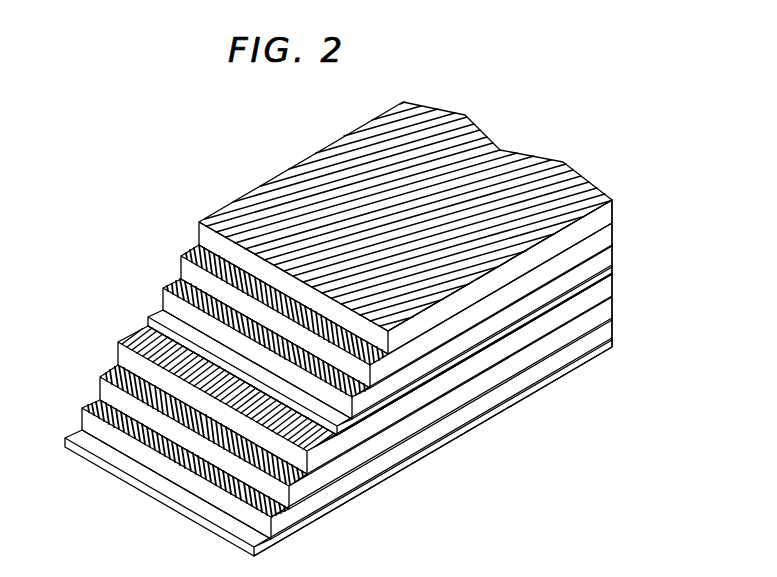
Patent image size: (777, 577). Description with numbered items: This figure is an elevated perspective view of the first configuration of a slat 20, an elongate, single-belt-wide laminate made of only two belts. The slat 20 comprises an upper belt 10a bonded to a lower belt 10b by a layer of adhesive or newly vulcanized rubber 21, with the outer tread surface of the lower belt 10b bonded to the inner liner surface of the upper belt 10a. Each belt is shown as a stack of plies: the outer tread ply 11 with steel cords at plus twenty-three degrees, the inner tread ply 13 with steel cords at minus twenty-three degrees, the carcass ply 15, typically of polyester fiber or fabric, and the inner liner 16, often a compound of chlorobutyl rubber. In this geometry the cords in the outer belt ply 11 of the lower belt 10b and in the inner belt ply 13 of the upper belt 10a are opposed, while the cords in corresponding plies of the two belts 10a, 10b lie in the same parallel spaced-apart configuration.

The slat 20 is at (247, 135).
The upper belt 10a is at (623, 204).
The lower belt 10b is at (623, 282).
The outer tread ply 11 is at (204, 234).
The inner tread ply 13 is at (186, 267).
The carcass ply 15 is at (165, 293).
The inner liner 16 is at (151, 320).
The adhesive or newly vulcanized rubber 21 is at (557, 302).